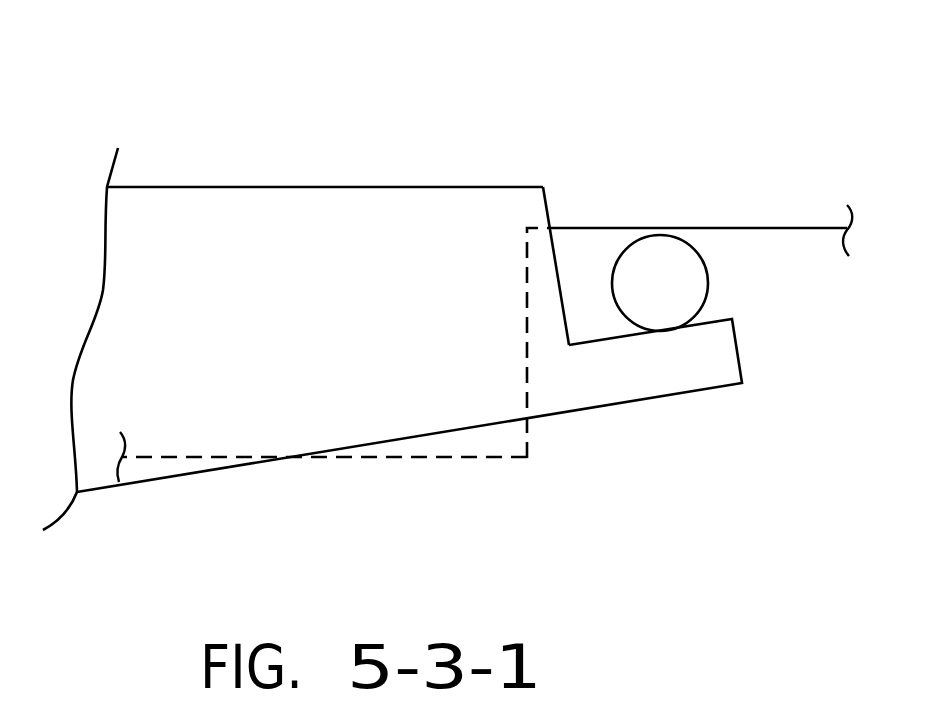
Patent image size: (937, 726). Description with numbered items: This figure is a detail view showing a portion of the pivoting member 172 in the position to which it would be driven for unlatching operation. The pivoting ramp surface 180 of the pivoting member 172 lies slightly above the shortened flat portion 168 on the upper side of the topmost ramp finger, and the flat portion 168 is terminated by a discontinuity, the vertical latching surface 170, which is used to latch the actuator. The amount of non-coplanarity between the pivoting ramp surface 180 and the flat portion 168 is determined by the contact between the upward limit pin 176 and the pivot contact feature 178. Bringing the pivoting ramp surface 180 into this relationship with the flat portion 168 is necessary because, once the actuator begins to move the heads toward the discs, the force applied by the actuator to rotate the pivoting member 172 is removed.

The shortened flat portion 168 is at (806, 228).
The vertical latching surface 170 is at (527, 330).
The pivoting member 172 is at (221, 215).
The upward limit pin 176 is at (656, 279).
The pivot contact feature 178 is at (717, 320).
The pivoting ramp surface 180 is at (325, 187).